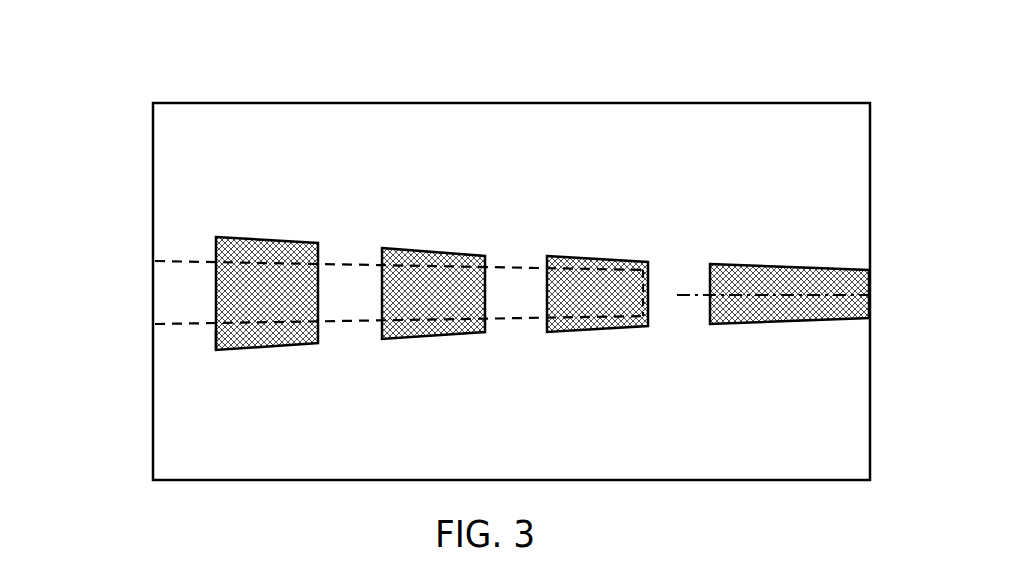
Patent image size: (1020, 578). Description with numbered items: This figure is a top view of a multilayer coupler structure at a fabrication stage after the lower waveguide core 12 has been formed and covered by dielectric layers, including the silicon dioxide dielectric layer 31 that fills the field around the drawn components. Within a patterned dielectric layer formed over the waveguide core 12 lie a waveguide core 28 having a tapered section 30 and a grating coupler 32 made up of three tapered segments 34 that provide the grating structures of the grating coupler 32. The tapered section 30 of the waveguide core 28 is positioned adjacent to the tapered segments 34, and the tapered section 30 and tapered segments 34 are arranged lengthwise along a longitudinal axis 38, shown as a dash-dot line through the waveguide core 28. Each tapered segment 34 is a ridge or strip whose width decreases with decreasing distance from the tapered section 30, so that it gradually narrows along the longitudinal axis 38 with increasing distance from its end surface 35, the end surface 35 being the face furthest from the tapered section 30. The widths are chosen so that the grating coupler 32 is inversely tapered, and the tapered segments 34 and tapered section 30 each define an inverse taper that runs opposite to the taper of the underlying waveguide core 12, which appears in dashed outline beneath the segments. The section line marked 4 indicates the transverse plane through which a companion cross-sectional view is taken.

The section line 4- 4 is at (91, 297).
The waveguide core 12 is at (349, 322).
The waveguide core 28 is at (770, 307).
The tapered section 30 is at (710, 78).
The dielectric layer 31 is at (790, 453).
The grating coupler 32 is at (650, 75).
The tapered segments 34 is at (275, 280).
The end surface 35 is at (216, 343).
The longitudinal axis 38 is at (822, 295).